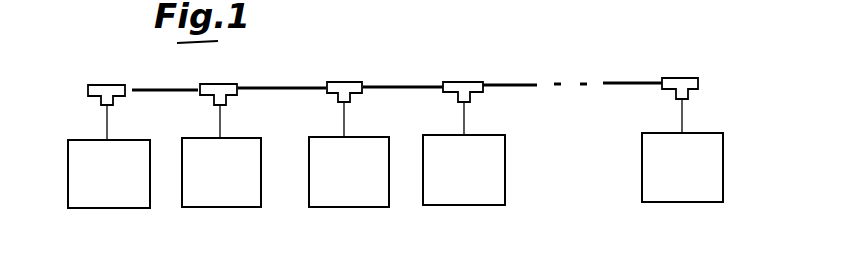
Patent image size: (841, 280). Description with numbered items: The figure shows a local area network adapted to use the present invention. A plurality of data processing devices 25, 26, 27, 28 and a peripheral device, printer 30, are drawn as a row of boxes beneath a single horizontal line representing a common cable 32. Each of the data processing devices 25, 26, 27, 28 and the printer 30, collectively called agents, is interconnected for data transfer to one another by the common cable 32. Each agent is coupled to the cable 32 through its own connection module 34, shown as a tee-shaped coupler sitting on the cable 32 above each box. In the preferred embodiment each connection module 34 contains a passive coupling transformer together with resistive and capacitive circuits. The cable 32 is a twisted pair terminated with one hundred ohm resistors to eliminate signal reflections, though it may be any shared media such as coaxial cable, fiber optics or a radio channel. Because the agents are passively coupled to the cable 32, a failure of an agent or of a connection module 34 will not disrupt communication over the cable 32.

The data processing device 25 is at (109, 174).
The data processing device 26 is at (221, 172).
The data processing device 27 is at (349, 172).
The data processing device 28 is at (464, 170).
The printer 30 is at (682, 167).
The common cable 32 is at (388, 86).
The connection module 34 is at (110, 85).